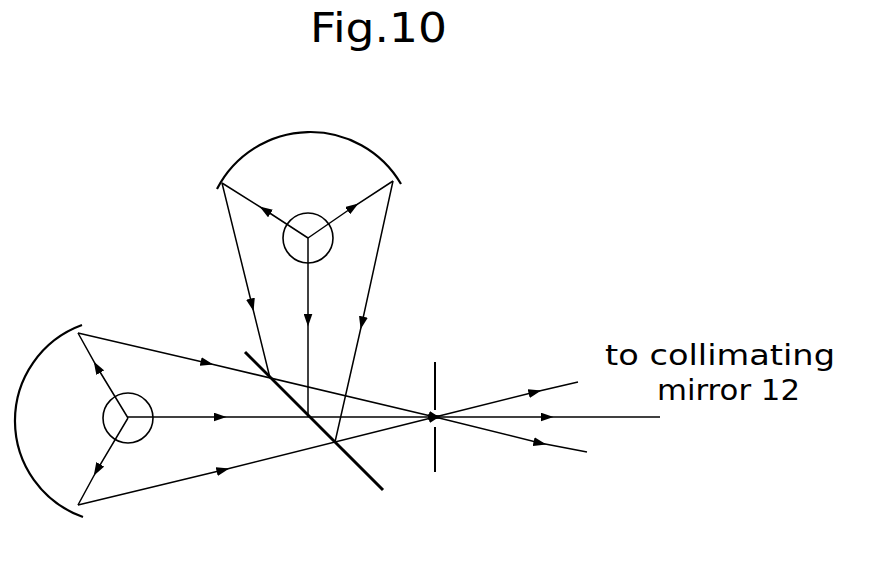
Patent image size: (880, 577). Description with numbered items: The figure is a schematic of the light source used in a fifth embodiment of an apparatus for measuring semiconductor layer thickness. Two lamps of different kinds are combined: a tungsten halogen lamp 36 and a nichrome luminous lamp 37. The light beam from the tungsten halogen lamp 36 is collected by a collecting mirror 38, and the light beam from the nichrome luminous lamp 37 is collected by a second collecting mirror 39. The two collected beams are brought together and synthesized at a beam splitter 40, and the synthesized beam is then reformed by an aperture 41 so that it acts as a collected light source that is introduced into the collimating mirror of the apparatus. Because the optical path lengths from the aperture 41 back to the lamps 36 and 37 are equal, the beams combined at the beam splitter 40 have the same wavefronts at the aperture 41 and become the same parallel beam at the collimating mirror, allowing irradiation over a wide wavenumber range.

The tungsten halogen lamp 36 is at (137, 442).
The nichrome luminous lamp 37 is at (332, 243).
The collecting mirror 38 is at (50, 487).
The collecting mirror 39 is at (377, 155).
The beam splitter 40 is at (363, 468).
The aperture 41 is at (435, 463).